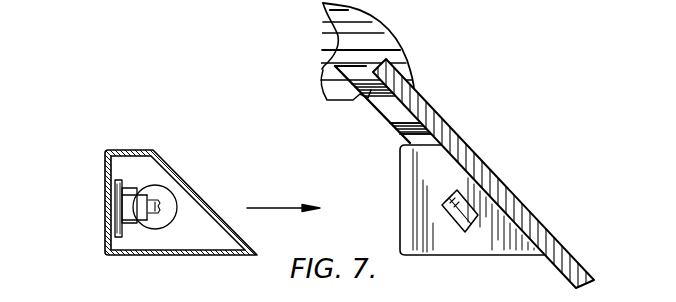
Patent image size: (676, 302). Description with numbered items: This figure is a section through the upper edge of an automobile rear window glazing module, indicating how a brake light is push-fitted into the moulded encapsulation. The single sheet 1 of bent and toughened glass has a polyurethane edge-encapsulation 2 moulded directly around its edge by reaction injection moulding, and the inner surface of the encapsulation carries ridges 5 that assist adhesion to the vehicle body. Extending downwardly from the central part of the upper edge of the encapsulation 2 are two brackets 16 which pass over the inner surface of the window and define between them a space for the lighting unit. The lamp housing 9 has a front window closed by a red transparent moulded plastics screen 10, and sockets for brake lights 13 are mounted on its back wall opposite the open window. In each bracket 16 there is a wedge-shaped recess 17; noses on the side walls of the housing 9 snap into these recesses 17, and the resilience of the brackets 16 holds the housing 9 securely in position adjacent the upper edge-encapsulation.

The sheet of glass 1 is at (446, 139).
The edge-encapsulation 2 is at (356, 53).
The ridges 5 is at (353, 100).
The lamp housing 9 is at (106, 191).
The red transparent moulded plastics screen 10 is at (202, 203).
The brake lights 13 is at (156, 229).
The brackets 16 is at (447, 243).
The wedge-shaped recess 17 is at (443, 207).